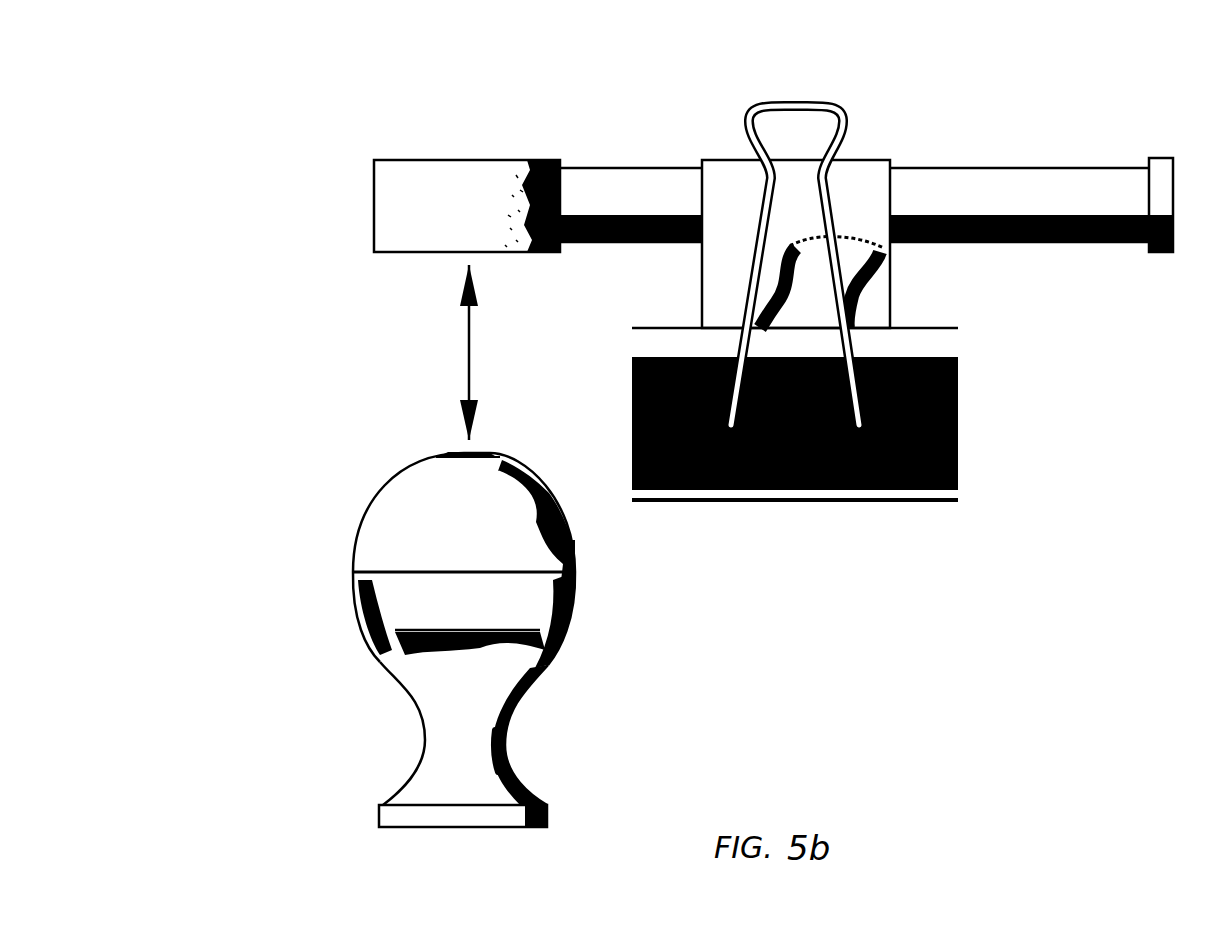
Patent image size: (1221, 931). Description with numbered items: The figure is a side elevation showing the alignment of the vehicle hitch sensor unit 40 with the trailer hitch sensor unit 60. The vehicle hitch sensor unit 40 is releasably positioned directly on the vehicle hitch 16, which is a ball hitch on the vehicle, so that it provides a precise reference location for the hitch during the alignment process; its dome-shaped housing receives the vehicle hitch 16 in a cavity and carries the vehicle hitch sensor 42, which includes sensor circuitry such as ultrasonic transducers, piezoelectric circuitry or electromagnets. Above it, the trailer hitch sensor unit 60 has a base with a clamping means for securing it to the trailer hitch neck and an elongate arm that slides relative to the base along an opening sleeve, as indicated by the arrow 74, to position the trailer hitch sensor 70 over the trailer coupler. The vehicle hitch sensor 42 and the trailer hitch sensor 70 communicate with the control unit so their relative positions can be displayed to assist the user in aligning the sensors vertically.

The trailer hitch sensor 70 is at (373, 236).
The arrow 74 is at (1147, 110).
The trailer hitch sensor unit 60 is at (912, 532).
The vehicle hitch sensor unit 40 is at (365, 512).
The vehicle hitch sensor 42 is at (483, 453).
The vehicle hitch 16 is at (366, 607).